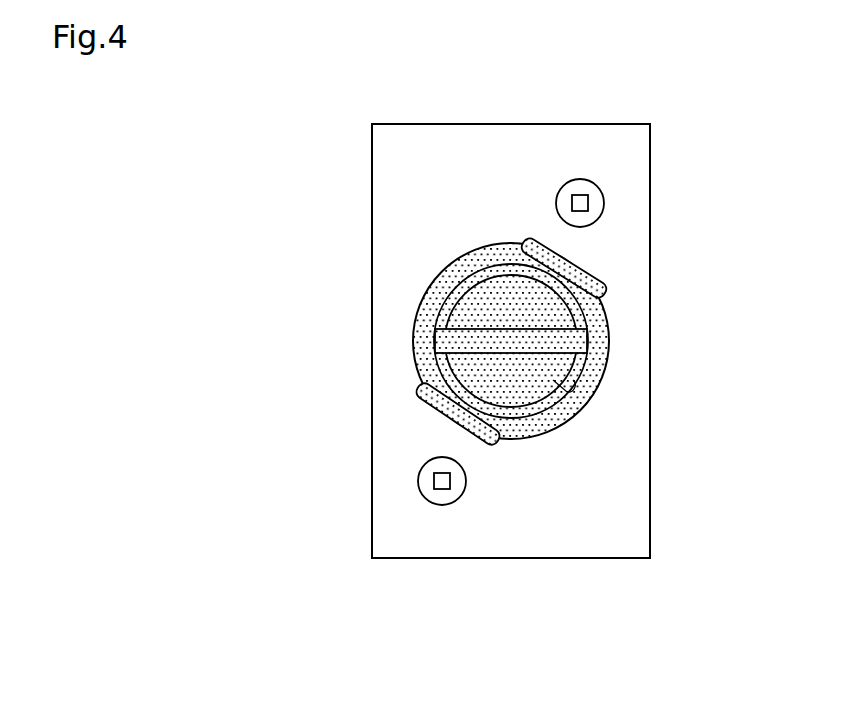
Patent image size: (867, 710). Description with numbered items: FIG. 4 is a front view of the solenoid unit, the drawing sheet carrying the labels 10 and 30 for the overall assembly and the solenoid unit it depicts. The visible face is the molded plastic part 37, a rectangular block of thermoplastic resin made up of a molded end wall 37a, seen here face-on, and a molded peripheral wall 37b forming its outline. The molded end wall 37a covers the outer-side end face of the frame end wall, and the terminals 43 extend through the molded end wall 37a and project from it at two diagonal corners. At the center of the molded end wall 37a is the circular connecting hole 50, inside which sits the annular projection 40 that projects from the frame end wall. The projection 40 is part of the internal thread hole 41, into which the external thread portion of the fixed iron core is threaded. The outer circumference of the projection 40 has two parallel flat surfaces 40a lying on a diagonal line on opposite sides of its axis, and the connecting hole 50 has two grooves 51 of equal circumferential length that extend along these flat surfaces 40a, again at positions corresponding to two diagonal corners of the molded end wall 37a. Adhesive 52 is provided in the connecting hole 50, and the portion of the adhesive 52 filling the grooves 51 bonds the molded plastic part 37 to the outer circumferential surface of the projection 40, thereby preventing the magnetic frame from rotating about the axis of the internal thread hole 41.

The power transmission device 10 is at (659, 113).
The circuit board 30 is at (350, 117).
The molded plastic part 37 is at (388, 222).
The molded end wall 37a is at (637, 436).
The molded peripheral wall 37b is at (648, 390).
The projection 40 is at (428, 290).
The flat surfaces 40a is at (555, 264).
The internal thread hole 41 is at (563, 395).
The terminal 43 is at (590, 204).
The connecting hole 50 is at (425, 337).
The grooves 51 is at (584, 268).
The adhesive 52 is at (606, 345).